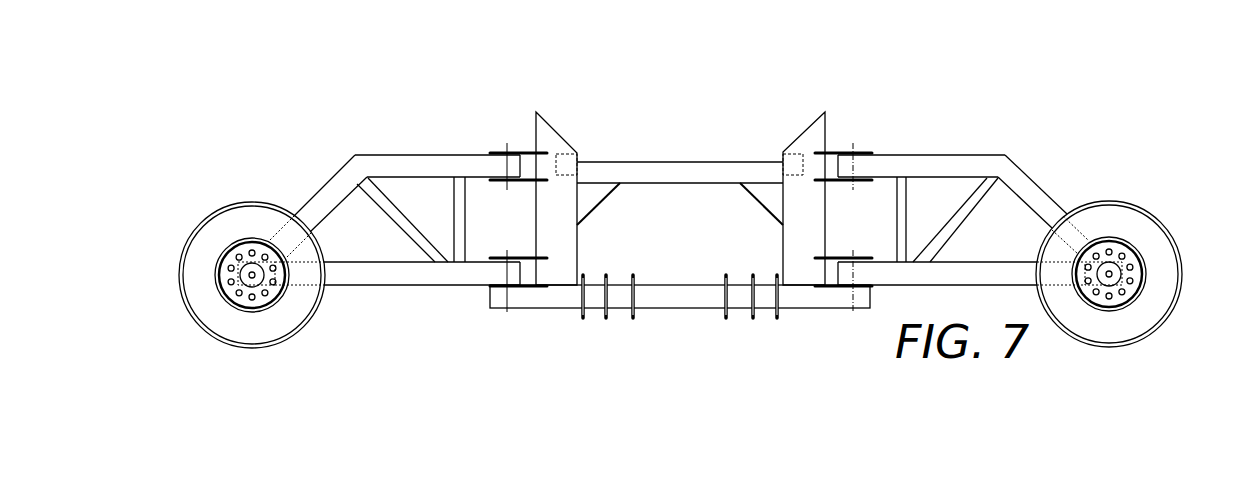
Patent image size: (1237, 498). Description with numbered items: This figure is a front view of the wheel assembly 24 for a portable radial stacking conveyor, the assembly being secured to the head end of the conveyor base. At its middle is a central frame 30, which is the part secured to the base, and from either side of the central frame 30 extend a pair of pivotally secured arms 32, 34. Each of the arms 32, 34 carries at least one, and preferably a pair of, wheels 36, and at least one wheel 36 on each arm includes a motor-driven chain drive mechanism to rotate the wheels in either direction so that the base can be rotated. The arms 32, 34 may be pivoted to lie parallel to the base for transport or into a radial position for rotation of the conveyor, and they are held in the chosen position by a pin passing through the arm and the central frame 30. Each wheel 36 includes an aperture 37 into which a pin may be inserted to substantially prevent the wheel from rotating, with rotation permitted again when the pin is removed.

The wheel assembly 24 is at (494, 100).
The central frame 30 is at (672, 172).
The arm 32 is at (472, 163).
The arm 34 is at (925, 163).
The wheel 36 is at (237, 215).
The aperture 37 is at (228, 270).